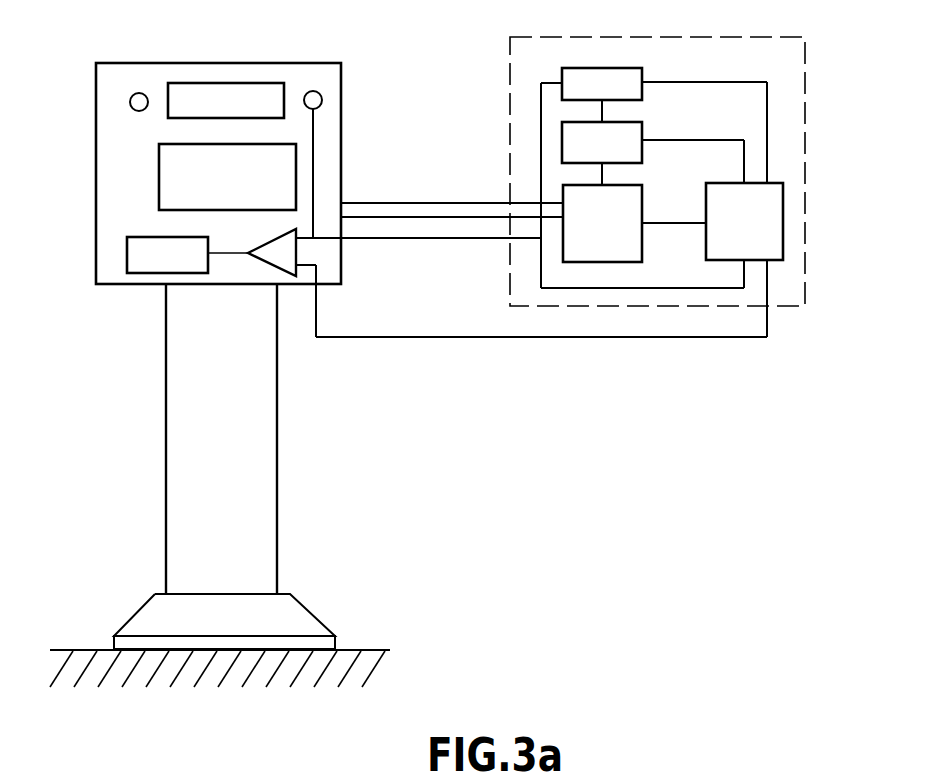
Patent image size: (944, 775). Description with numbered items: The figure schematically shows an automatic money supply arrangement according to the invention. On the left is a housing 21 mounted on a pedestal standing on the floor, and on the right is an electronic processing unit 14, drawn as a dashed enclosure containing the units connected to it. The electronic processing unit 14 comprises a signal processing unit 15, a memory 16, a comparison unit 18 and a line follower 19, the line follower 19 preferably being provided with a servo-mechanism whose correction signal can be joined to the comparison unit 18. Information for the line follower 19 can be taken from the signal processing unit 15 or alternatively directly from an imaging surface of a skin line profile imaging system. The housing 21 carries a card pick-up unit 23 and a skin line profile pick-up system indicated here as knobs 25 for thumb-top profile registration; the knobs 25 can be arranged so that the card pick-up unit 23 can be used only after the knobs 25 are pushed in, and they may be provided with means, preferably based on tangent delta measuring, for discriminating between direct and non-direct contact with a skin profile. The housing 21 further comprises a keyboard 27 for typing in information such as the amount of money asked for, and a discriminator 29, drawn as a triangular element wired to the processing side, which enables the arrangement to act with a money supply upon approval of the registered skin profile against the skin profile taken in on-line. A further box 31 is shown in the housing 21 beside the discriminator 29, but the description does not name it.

The electronic processing unit 14 is at (806, 122).
The signal processing unit 15 is at (610, 247).
The memory 16 is at (578, 143).
The comparison unit 18 is at (770, 222).
The line follower 19 is at (612, 82).
The housing 21 is at (126, 318).
The card pick-up unit 23 is at (226, 92).
The knobs 25 is at (133, 95).
The keyboard 27 is at (177, 173).
The discriminator 29 is at (300, 255).
The input device 31 is at (138, 255).